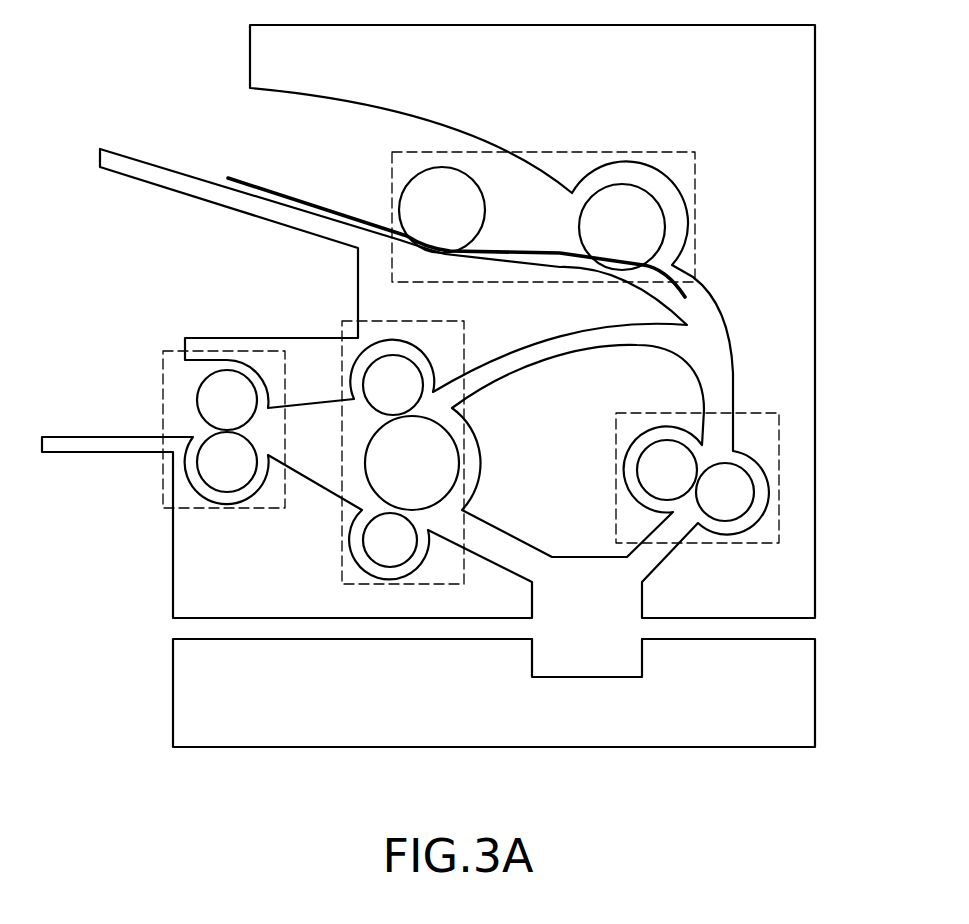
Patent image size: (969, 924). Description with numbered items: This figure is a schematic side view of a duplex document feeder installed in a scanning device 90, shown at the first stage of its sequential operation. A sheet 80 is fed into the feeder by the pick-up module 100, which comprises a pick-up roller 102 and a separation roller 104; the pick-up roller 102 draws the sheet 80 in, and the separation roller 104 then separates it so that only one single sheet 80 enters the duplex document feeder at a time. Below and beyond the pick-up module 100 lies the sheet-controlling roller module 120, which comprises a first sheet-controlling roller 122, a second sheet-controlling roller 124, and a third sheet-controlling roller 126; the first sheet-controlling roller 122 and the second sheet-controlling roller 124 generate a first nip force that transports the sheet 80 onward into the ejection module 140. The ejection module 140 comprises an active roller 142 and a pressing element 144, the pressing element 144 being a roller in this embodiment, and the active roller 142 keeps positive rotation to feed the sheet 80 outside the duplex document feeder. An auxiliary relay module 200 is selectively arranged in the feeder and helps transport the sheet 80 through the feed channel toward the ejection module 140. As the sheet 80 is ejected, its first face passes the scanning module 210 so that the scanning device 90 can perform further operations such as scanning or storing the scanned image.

The sheet 80 is at (297, 195).
The scanning device 90 is at (494, 722).
The pick-up module 100 is at (546, 193).
The pick-up roller 102 is at (432, 195).
The separation roller 104 is at (643, 233).
The sheet-controlling roller module 120 is at (402, 453).
The first sheet-controlling roller 122 is at (382, 525).
The second sheet-controlling roller 124 is at (442, 473).
The third sheet-controlling roller 126 is at (387, 377).
The ejection module 140 is at (185, 442).
The active roller 142 is at (217, 463).
The pressing element 144 is at (217, 387).
The auxiliary relay module 200 is at (780, 478).
The scanning module 210 is at (593, 664).